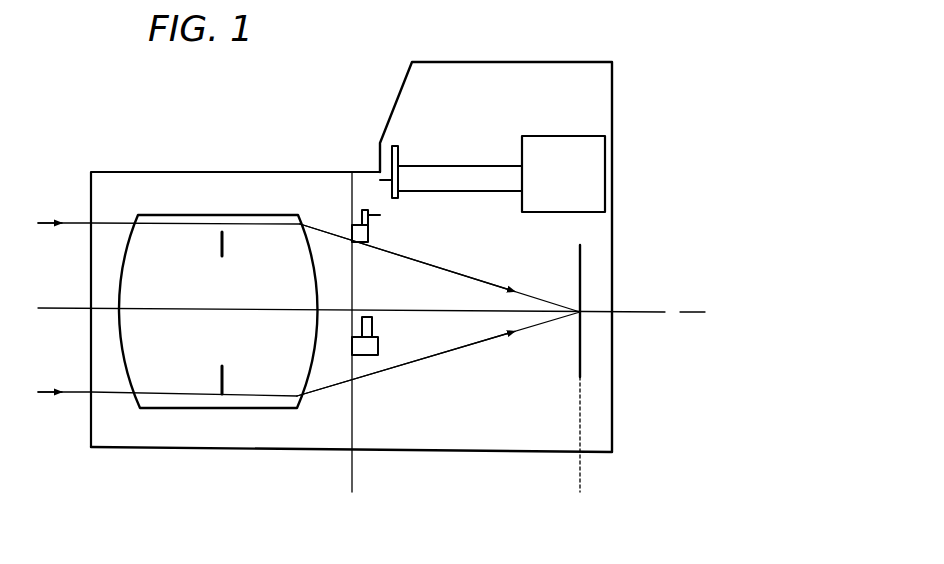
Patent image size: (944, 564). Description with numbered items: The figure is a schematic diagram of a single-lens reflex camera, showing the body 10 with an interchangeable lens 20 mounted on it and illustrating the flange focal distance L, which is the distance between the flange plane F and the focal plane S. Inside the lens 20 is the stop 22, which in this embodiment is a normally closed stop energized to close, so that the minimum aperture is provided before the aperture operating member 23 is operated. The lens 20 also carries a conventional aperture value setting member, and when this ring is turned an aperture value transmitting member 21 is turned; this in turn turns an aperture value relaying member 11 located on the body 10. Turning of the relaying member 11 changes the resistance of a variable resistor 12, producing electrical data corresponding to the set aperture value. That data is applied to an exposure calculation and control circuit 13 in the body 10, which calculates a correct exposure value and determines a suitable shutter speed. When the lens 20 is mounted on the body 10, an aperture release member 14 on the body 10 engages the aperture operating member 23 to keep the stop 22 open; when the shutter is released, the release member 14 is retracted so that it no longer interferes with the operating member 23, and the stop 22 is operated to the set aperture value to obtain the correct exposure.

The body 10 is at (608, 54).
The interchangeable lens 20 is at (242, 166).
The stop 22 is at (217, 386).
The aperture value relaying member 11 is at (363, 209).
The aperture value transmitting member 21 is at (369, 235).
The variable resistor 12 is at (398, 148).
The exposure calculation and control circuit 13 is at (660, 263).
The aperture release member 14 is at (373, 321).
The aperture operating member 23 is at (378, 346).
The flange plane F is at (350, 432).
The focal plane S is at (584, 283).
The flange focal distance L is at (580, 482).